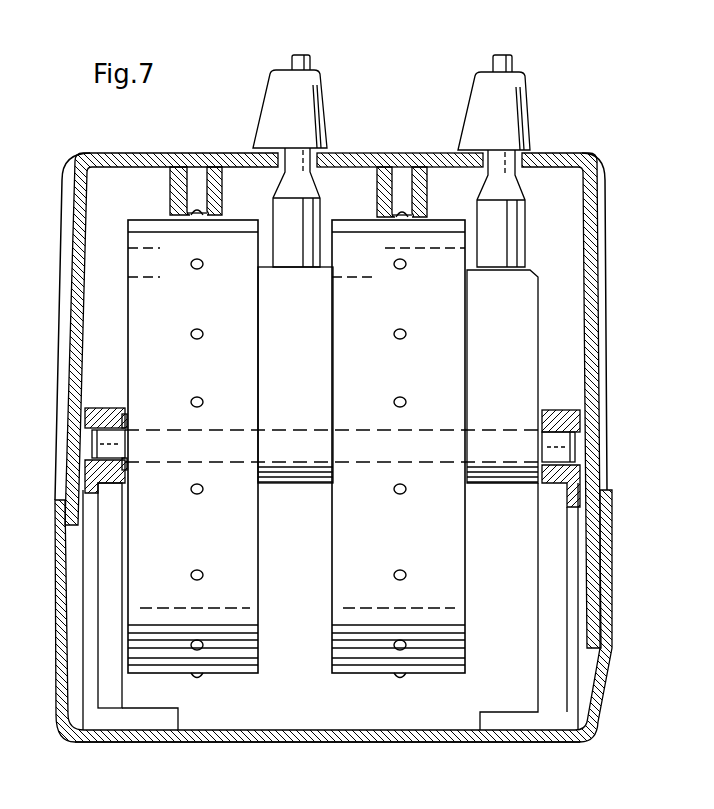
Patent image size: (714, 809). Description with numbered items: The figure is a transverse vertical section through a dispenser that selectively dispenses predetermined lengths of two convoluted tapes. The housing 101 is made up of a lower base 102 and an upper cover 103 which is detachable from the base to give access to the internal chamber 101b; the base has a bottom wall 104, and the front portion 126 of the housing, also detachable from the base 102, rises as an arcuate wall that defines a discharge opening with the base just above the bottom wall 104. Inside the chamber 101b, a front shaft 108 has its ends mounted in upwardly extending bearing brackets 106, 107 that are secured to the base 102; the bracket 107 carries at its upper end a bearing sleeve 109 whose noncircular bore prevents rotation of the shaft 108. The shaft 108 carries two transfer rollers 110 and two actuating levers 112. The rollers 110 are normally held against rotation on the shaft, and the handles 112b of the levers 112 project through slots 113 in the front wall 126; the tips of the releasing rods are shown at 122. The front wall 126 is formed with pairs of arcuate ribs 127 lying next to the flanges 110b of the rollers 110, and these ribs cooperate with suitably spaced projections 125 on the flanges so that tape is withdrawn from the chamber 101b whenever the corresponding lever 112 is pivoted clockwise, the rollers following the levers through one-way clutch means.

The housing 101 is at (83, 152).
The internal chamber 101b is at (138, 198).
The base 102 is at (601, 680).
The cover 103 is at (56, 578).
The bottom wall 104 is at (215, 743).
The bearing bracket 106 is at (88, 572).
The bearing bracket 107 is at (569, 613).
The front shaft 108 is at (100, 443).
The bearing sleeve 109 is at (550, 487).
The transfer rollers 110 is at (326, 586).
The flanges 110b is at (343, 633).
The actuating levers 112 is at (326, 212).
The handles 112b is at (325, 90).
The slots 113 is at (322, 158).
The tips of releasing rods 122 is at (309, 57).
The projections 125 is at (198, 217).
The front portion 126 is at (590, 315).
The arcuate ribs 127 is at (427, 190).